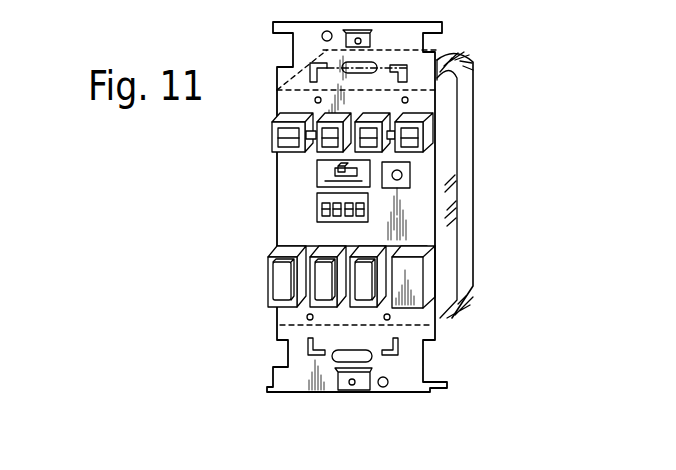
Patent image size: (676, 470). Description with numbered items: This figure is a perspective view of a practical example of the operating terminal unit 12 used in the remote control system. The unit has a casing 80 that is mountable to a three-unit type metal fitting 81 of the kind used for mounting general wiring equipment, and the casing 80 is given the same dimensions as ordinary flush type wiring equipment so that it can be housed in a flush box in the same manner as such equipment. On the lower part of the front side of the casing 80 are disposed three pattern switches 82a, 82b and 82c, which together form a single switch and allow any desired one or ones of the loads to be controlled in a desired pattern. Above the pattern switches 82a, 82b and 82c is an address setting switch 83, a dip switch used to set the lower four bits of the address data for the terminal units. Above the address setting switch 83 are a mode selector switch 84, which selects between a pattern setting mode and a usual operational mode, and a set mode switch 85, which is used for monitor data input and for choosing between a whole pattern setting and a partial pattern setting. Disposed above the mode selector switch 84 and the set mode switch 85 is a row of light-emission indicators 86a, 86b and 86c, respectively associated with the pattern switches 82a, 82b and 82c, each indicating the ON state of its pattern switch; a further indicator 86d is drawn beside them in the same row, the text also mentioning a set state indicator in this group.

The operating terminal unit 12 is at (468, 268).
The casing 80 is at (475, 76).
The three-unit type metal fitting 81 is at (421, 229).
The pattern switch 82a is at (270, 277).
The pattern switch 82b is at (322, 281).
The pattern switch 82c is at (360, 290).
The address setting switch 83 is at (317, 211).
The mode selector switch 84 is at (343, 172).
The set mode switch 85 is at (410, 183).
The light-emission indicator 86a is at (285, 140).
The light-emission indicator 86b is at (333, 130).
The light-emission indicator 86c is at (433, 118).
The selector switch 86d is at (424, 139).